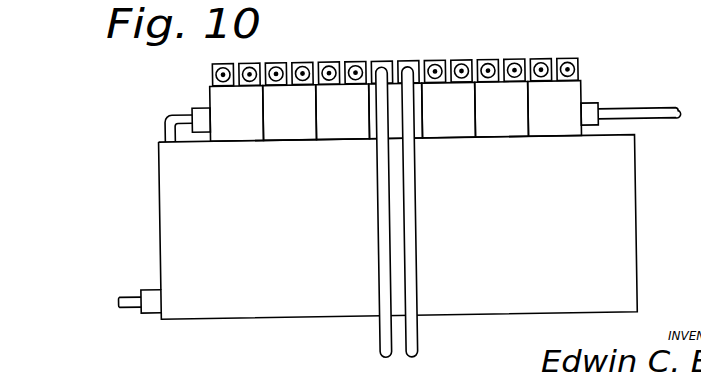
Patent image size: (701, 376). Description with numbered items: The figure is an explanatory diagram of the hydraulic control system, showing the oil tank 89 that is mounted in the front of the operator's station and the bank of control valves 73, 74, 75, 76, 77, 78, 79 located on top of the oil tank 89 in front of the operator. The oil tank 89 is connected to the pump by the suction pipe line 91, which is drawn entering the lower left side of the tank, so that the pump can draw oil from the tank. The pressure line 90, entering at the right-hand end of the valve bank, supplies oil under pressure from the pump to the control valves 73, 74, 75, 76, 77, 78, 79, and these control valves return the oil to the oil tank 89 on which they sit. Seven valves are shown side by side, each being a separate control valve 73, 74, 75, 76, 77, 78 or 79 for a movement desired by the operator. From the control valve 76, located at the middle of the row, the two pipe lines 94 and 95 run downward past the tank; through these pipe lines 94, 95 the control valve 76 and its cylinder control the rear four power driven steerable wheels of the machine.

The control valve 73 is at (554, 97).
The control valve 74 is at (501, 98).
The control valve 75 is at (448, 99).
The control valve 76 is at (398, 110).
The control valve 77 is at (342, 100).
The control valve 78 is at (289, 101).
The control valve 79 is at (236, 102).
The oil tank 89 is at (172, 196).
The pressure line 90 is at (662, 111).
The suction pipe line 91 is at (128, 291).
The pipe line 94 is at (377, 252).
The pipe line 95 is at (416, 253).